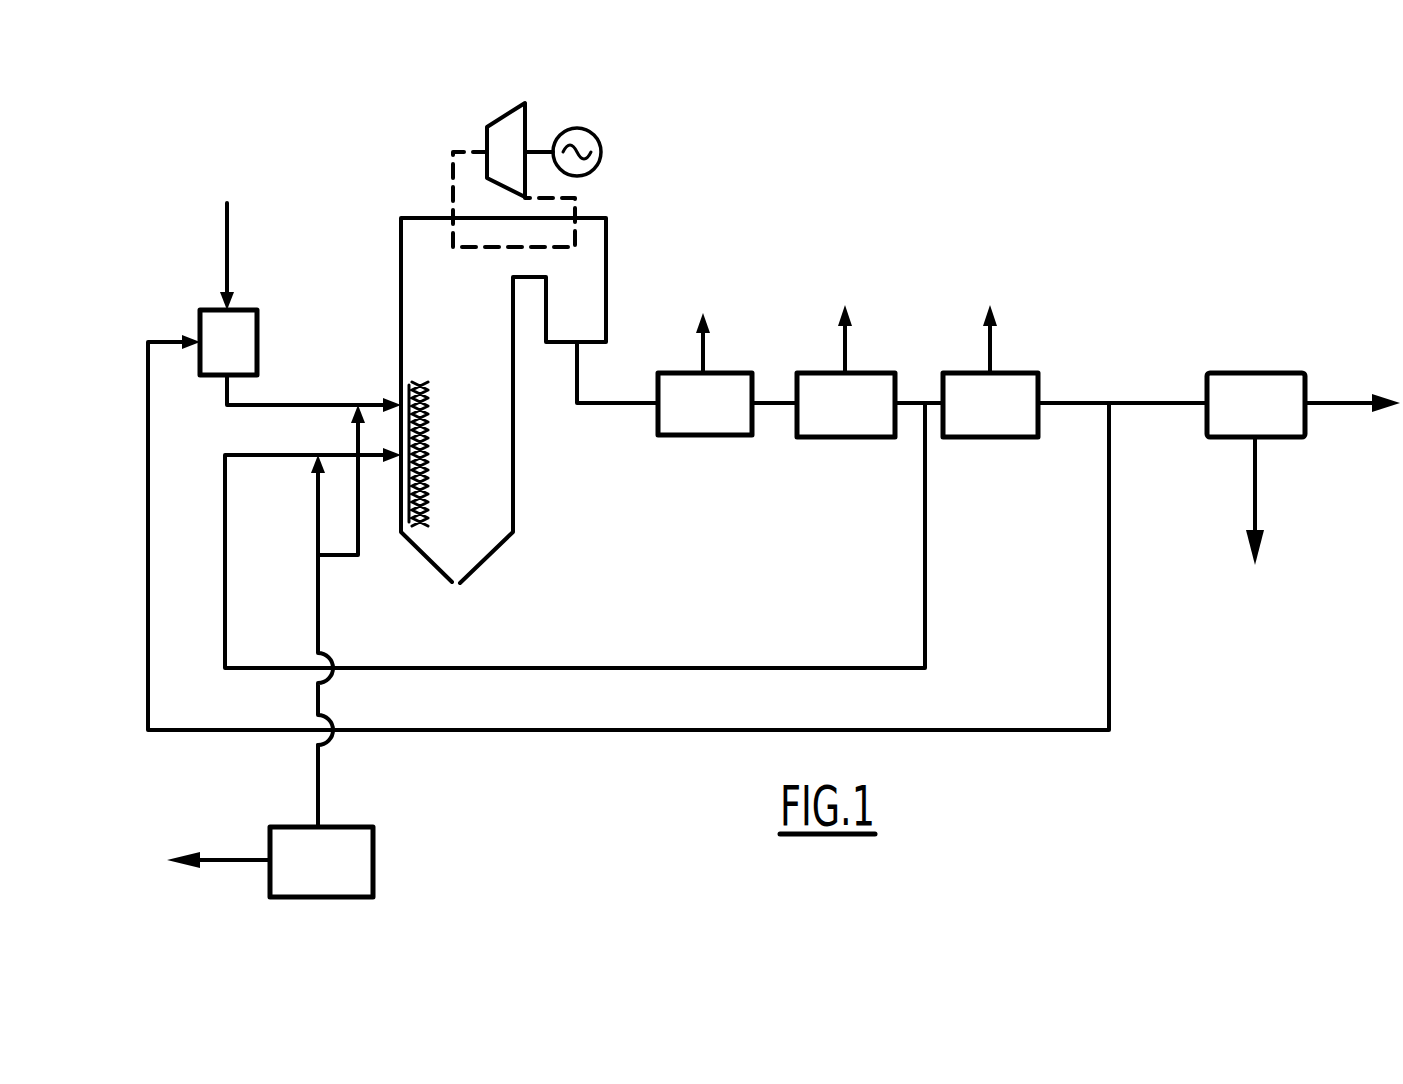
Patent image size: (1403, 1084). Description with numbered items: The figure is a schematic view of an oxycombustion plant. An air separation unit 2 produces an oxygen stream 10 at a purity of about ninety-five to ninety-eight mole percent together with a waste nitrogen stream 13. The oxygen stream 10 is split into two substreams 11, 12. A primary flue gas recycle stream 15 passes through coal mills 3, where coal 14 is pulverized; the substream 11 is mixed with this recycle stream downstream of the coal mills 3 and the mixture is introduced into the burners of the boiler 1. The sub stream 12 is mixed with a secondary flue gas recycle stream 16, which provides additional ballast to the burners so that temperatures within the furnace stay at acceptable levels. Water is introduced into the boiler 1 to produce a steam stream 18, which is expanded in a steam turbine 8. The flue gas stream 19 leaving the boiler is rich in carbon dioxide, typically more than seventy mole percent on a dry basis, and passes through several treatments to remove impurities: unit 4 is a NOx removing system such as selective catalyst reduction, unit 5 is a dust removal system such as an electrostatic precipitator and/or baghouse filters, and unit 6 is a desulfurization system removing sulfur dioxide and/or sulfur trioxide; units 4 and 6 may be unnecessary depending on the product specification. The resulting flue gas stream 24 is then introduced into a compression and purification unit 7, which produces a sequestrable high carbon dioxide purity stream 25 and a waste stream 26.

The boiler 1 is at (513, 497).
The air separation unit 2 is at (373, 880).
The coal mills 3 is at (240, 312).
The NOx removing system 4 is at (690, 435).
The dust removal system 5 is at (835, 437).
The desulfurization system 6 is at (1018, 437).
The compression and purification unit 7 is at (1268, 373).
The steam turbine 8 is at (507, 123).
The oxygen stream 10 is at (318, 797).
The substream 11 is at (360, 527).
The sub stream 12 is at (318, 538).
The waste nitrogen stream 13 is at (243, 860).
The coal 14 is at (225, 250).
The primary flue gas recycle stream 15 is at (148, 632).
The secondary flue gas recycle stream 16 is at (250, 455).
The steam stream 18 is at (453, 185).
The flue gas stream 19 is at (618, 403).
The flue gas stream 24 is at (1160, 403).
The high CO2 purity stream 25 is at (1343, 403).
The waste stream 26 is at (1258, 475).